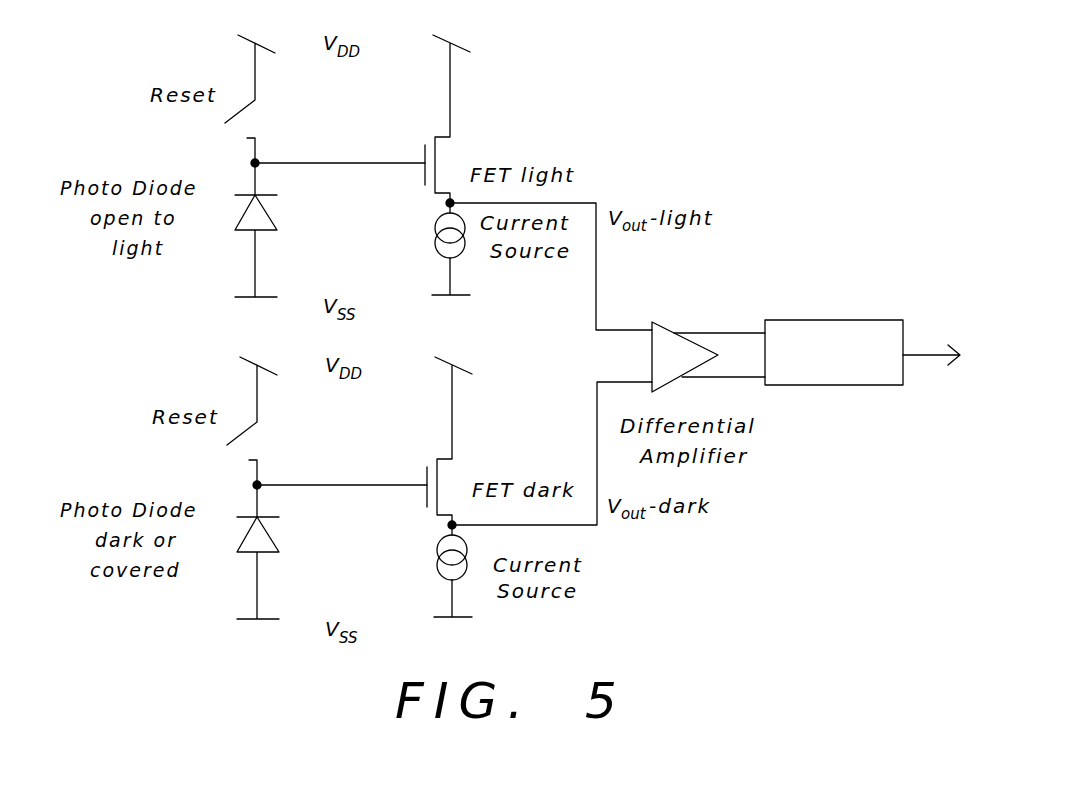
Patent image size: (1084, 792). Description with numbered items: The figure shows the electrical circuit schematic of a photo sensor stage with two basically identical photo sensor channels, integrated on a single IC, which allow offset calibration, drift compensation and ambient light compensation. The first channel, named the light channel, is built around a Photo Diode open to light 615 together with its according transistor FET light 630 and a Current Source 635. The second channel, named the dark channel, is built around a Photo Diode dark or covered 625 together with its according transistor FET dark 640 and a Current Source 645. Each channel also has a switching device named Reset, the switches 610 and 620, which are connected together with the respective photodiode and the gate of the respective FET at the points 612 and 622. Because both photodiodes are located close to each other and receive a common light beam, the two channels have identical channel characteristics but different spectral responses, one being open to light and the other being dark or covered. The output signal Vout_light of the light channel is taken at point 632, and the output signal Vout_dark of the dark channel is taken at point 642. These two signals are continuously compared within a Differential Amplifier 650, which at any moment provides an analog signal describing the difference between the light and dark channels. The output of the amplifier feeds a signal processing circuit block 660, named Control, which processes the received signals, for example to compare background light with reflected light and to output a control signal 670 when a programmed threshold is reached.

The Reset switching device 610 is at (250, 117).
The connection point 612 is at (257, 161).
The Photo Diode open to light 615 is at (266, 205).
The Reset switching device 620 is at (286, 403).
The connection point 622 is at (338, 486).
The Photo Diode dark or covered 625 is at (301, 568).
The FET light 630 is at (440, 168).
The output point Vout_light 632 is at (446, 206).
The Current Source 635 is at (435, 232).
The FET dark 640 is at (471, 446).
The output point Vout_dark 642 is at (448, 528).
The Current Source 645 is at (427, 576).
The Differential Amplifier 650 is at (665, 318).
The signal processing circuit block Control 660 is at (808, 318).
The control output 670 is at (958, 367).